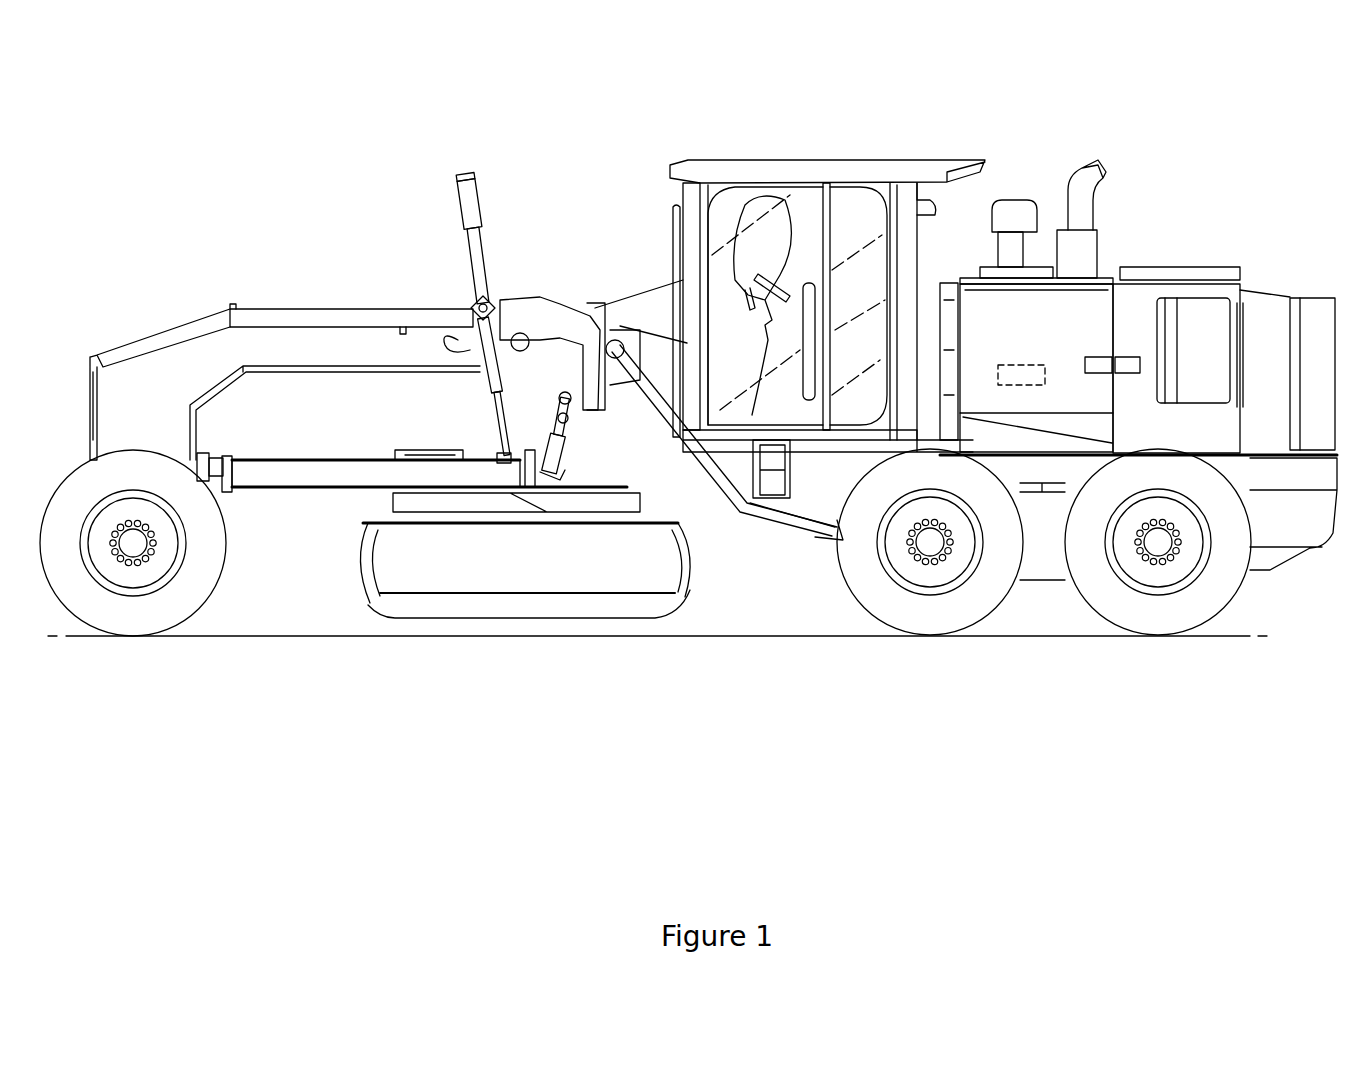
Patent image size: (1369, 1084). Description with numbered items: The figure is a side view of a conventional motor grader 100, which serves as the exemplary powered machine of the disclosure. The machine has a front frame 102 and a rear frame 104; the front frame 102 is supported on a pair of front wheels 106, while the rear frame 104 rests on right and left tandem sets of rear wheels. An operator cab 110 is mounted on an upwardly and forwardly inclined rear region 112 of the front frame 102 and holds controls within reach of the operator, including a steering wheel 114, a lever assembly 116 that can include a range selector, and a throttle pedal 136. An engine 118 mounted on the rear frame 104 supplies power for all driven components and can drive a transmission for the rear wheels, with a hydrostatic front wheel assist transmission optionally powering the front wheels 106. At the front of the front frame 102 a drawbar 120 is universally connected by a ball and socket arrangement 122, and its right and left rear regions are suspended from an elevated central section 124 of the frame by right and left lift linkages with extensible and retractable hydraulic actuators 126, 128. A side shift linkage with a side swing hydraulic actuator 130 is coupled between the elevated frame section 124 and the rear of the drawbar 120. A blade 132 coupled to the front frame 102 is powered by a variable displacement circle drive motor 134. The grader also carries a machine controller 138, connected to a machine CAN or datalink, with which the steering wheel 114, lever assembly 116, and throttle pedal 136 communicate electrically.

The motor grader 100 is at (1140, 128).
The front frame 102 is at (207, 275).
The rear frame 104 is at (1294, 596).
The front wheels 106 is at (160, 616).
The operator cab 110 is at (853, 165).
The rear region of the front frame 112 is at (697, 470).
The steering wheel 114 is at (765, 350).
The lever assembly 116 is at (750, 415).
The engine 118 is at (1133, 305).
The drawbar 120 is at (300, 458).
The ball and socket arrangement 122 is at (222, 484).
The elevated central section 124 is at (340, 318).
The right hydraulic actuator 126 is at (467, 256).
The left hydraulic actuator 128 is at (457, 205).
The side swing hydraulic actuator 130 is at (572, 450).
The blade 132 is at (560, 605).
The circle drive motor 134 is at (415, 448).
The throttle pedal 136 is at (770, 415).
The machine controller 138 is at (1018, 387).